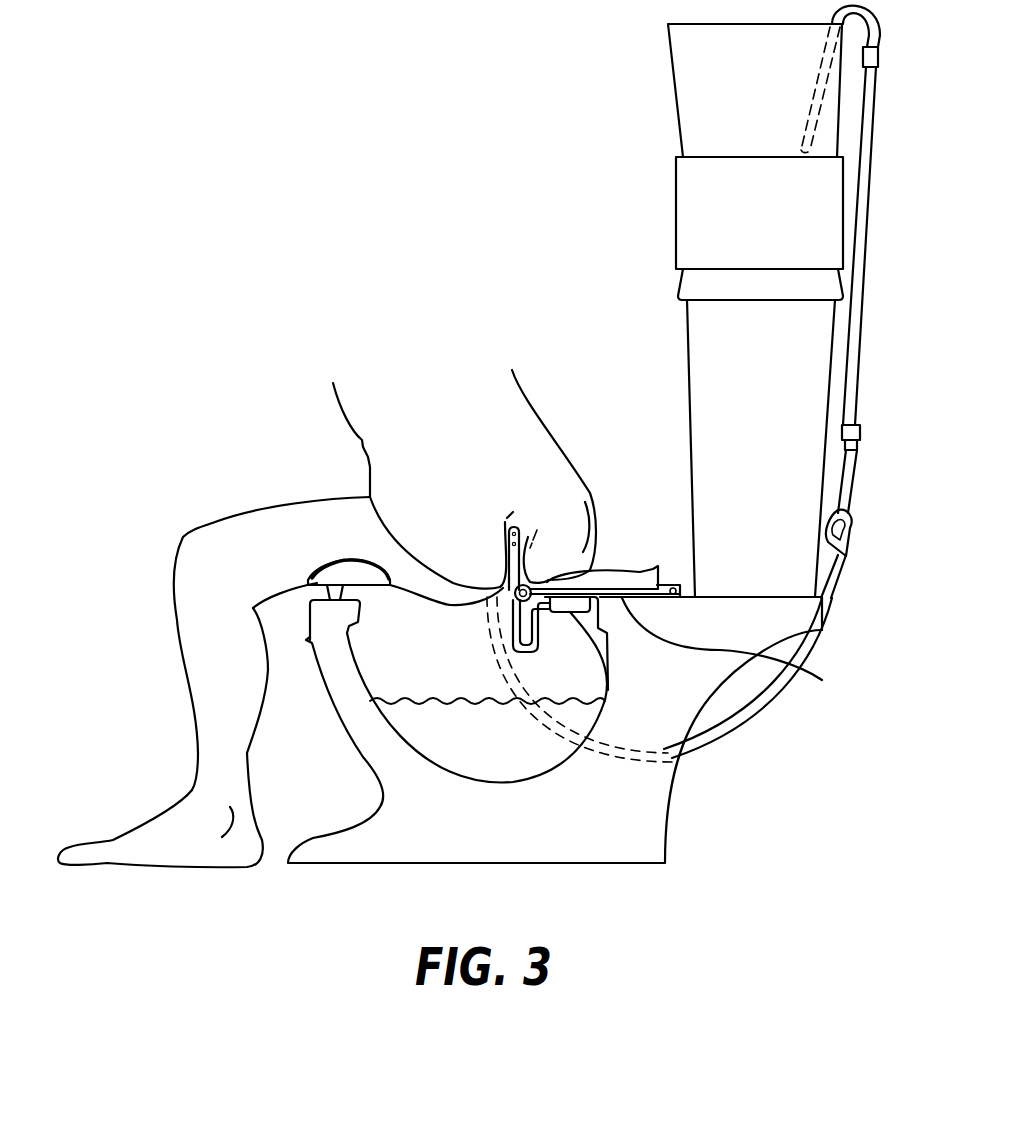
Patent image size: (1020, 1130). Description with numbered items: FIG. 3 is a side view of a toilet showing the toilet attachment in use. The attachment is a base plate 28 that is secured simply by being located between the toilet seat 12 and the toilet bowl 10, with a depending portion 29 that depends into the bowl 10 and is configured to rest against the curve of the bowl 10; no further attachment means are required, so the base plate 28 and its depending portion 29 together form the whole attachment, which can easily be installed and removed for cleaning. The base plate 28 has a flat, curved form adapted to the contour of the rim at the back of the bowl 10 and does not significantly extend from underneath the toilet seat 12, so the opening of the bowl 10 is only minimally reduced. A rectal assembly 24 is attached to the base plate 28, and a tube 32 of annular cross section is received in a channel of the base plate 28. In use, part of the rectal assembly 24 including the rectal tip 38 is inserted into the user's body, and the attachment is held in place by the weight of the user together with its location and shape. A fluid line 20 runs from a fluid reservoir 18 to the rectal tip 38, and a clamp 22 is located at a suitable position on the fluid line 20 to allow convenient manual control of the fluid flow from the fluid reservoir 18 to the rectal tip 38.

The toilet bowl 10 is at (323, 703).
The toilet seat 12 is at (620, 566).
The fluid reservoir 18 is at (685, 68).
The fluid line 20 is at (862, 362).
The clamp 22 is at (855, 525).
The rectal assembly 24 is at (513, 620).
The base plate 28 is at (818, 678).
The depending portion 29 is at (608, 688).
The tube 32 is at (762, 713).
The rectal tip 38 is at (520, 527).